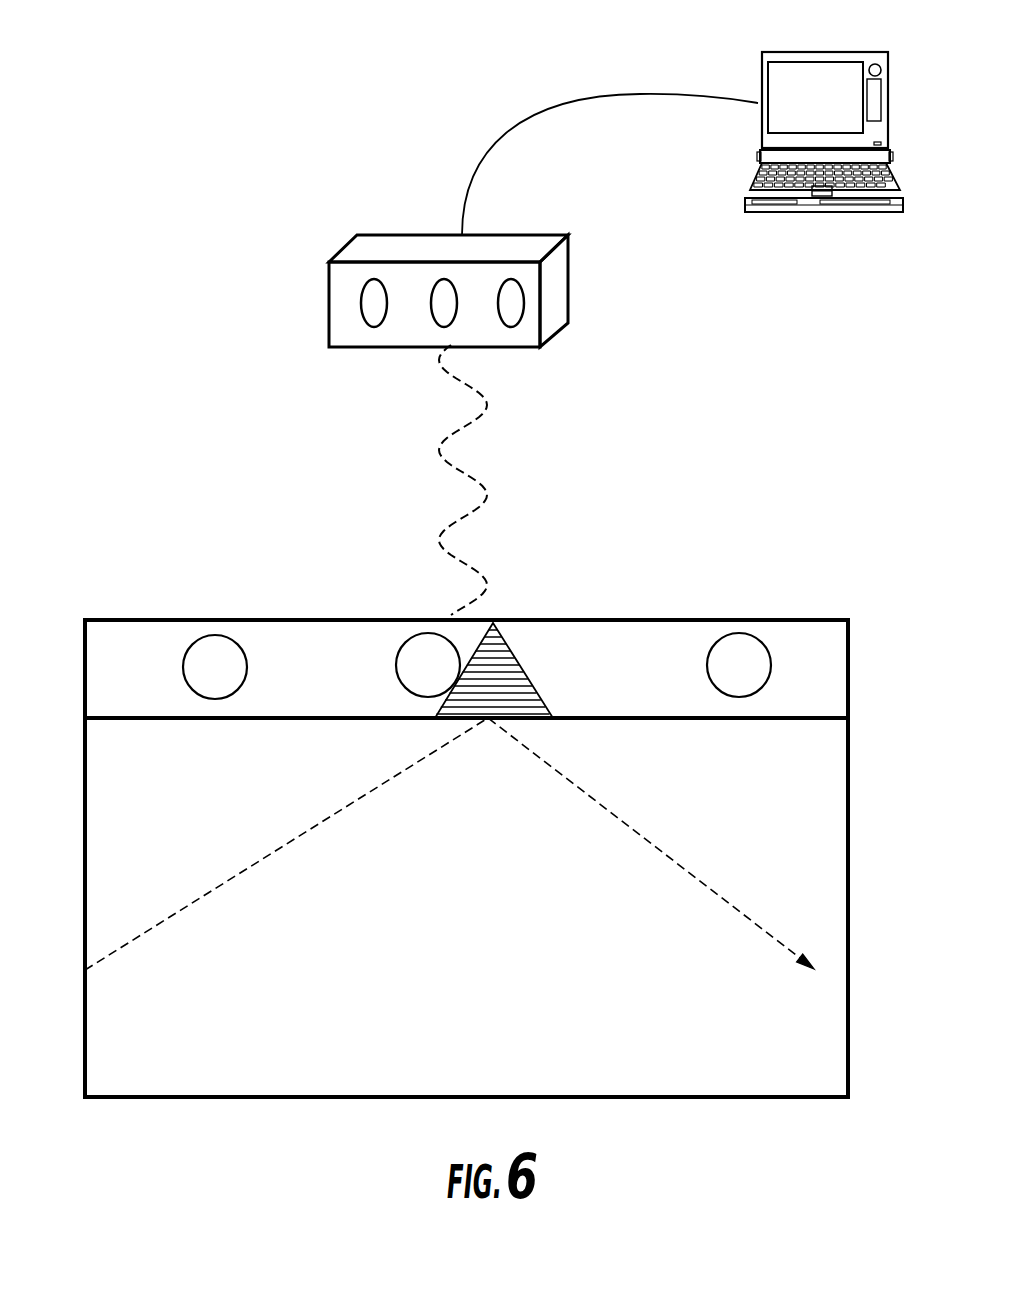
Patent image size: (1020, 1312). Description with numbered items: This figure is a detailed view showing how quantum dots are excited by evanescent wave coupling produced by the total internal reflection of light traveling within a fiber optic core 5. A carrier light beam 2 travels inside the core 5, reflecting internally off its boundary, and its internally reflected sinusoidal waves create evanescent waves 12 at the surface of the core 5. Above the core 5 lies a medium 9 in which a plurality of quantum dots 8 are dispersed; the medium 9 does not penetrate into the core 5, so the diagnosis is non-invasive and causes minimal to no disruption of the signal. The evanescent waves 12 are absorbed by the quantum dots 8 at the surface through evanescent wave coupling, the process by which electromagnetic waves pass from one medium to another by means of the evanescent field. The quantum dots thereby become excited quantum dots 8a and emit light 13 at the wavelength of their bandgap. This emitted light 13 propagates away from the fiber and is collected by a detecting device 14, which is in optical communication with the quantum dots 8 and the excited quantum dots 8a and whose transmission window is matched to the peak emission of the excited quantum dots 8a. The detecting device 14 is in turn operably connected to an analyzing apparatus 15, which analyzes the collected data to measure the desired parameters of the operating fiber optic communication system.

The light beam 2 is at (210, 895).
The core 5 is at (112, 822).
The quantum dots 8 is at (205, 636).
The excited quantum dots 8a is at (446, 640).
The medium 9 is at (112, 662).
The evanescent waves 12 is at (520, 665).
The emitted light 13 is at (463, 467).
The detecting device 14 is at (370, 236).
The analyzing apparatus 15 is at (803, 52).